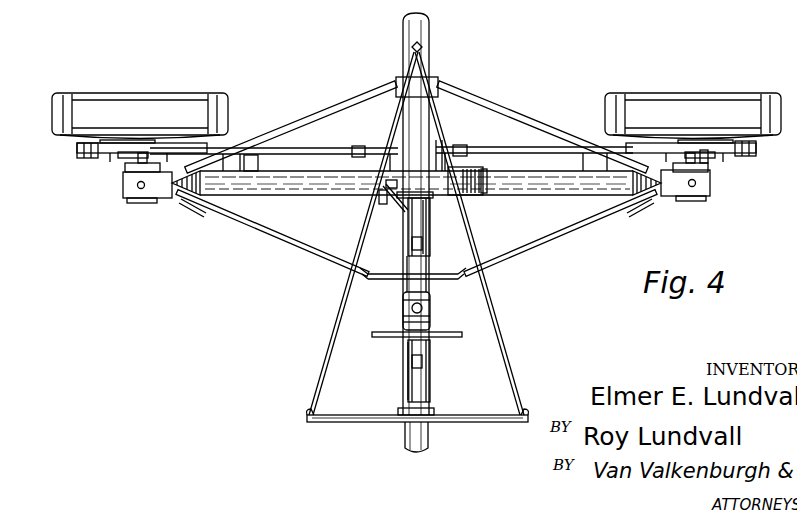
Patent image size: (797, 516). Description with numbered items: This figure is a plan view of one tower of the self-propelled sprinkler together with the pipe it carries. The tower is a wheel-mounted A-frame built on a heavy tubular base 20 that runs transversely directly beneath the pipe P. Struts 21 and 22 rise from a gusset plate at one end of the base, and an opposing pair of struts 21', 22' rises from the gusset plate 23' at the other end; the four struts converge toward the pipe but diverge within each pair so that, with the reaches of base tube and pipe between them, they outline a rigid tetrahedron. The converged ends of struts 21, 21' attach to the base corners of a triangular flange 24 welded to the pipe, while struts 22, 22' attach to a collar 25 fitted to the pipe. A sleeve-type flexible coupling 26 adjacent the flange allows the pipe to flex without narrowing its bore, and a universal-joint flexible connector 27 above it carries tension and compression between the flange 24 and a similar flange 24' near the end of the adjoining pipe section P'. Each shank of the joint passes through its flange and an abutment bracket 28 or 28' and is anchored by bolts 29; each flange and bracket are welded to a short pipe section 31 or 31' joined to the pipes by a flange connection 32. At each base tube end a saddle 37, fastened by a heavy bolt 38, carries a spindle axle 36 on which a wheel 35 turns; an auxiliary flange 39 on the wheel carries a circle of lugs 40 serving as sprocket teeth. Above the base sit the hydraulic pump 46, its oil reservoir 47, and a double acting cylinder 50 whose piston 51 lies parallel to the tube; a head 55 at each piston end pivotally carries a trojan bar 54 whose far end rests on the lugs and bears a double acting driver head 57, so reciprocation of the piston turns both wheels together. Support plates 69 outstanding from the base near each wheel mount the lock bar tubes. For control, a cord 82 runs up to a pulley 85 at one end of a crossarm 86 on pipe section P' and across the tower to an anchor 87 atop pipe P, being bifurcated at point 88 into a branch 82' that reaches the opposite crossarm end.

The pipe P is at (430, 209).
The pipe section P' is at (399, 441).
The base tube 20 is at (543, 183).
The strut 21 is at (272, 234).
The strut 21' is at (560, 233).
The strut 22 is at (291, 127).
The strut 22' is at (543, 127).
The gusset plate 23' is at (427, 203).
The triangular flange 24 is at (437, 283).
The triangular flange 24' is at (429, 351).
The collar 25 is at (418, 87).
The flexible coupling 26 is at (401, 304).
The flexible connector 27 is at (428, 312).
The abutment bracket 28 is at (437, 227).
The abutment bracket 28' is at (438, 371).
The bolts 29 is at (413, 246).
The short pipe section 31 is at (445, 227).
The short pipe section 31' is at (387, 374).
The flange connection 32 is at (408, 212).
The wheel 35 is at (90, 98).
The spindle axle 36 is at (710, 157).
The saddle 37 is at (703, 198).
The bolt 38 is at (137, 188).
The auxiliary flange 39 is at (133, 144).
The lugs 40 is at (80, 157).
The hydraulic pump 46 is at (462, 196).
The oil reservoir 47 is at (486, 171).
The double acting cylinder 50 is at (437, 147).
The piston 51 is at (376, 148).
The trojan bar 54 is at (295, 152).
The head 55 is at (463, 146).
The driver head 57 is at (117, 158).
The support plate 69 is at (252, 157).
The cord 82 is at (355, 233).
The cord branch 82' is at (483, 233).
The pulley 85 is at (306, 412).
The crossarm 86 is at (357, 425).
The anchor 87 is at (412, 47).
The bifurcation point 88 is at (380, 205).